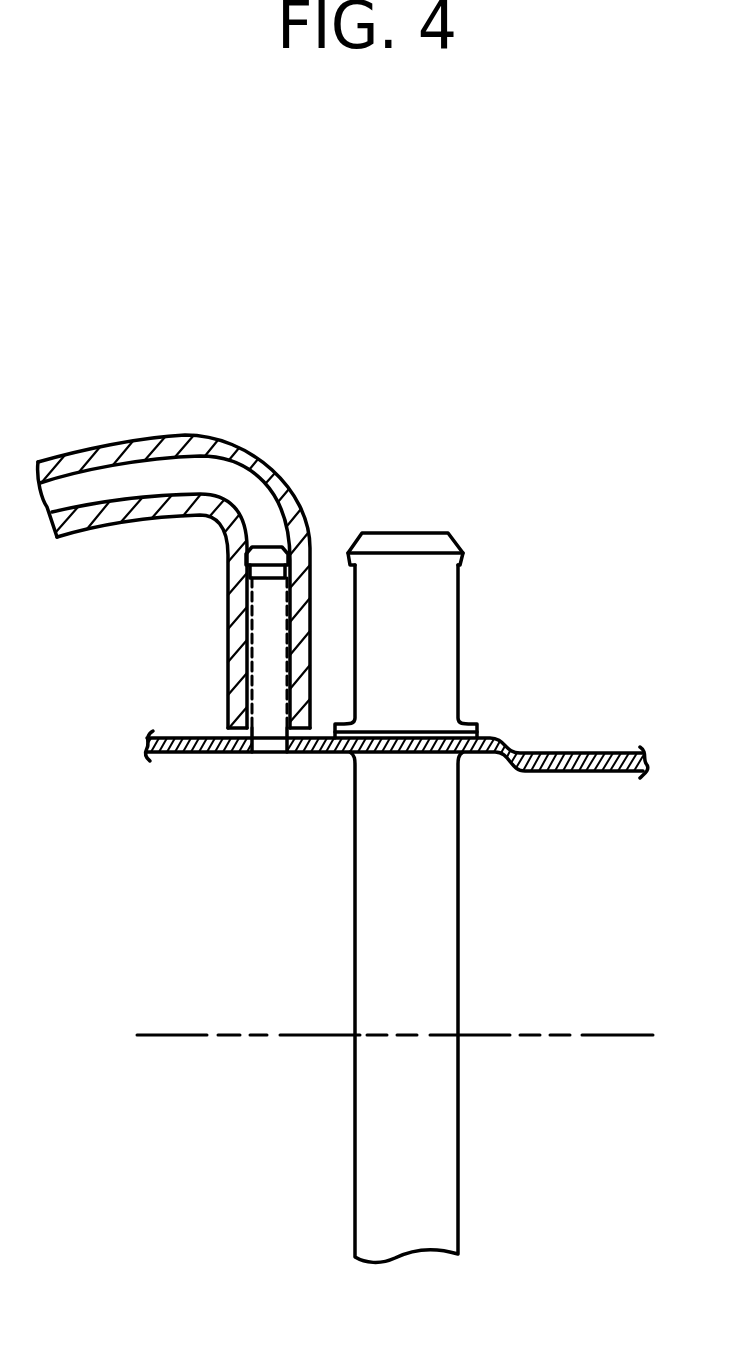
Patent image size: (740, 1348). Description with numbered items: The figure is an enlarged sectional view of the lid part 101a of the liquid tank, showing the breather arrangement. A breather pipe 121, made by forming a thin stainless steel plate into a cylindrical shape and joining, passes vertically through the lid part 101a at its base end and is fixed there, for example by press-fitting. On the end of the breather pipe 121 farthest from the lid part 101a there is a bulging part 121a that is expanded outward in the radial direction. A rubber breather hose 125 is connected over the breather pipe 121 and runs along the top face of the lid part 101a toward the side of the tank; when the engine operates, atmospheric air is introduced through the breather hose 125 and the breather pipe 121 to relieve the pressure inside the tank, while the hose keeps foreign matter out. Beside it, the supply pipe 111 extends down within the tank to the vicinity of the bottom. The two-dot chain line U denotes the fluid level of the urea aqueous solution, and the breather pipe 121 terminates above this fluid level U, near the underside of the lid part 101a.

The breather hose 125 is at (266, 466).
The breather pipe 121 is at (230, 705).
The bulging part 121a is at (232, 574).
The supply pipe 111 is at (458, 618).
The lid part 101a is at (588, 753).
The fluid level U is at (583, 1035).